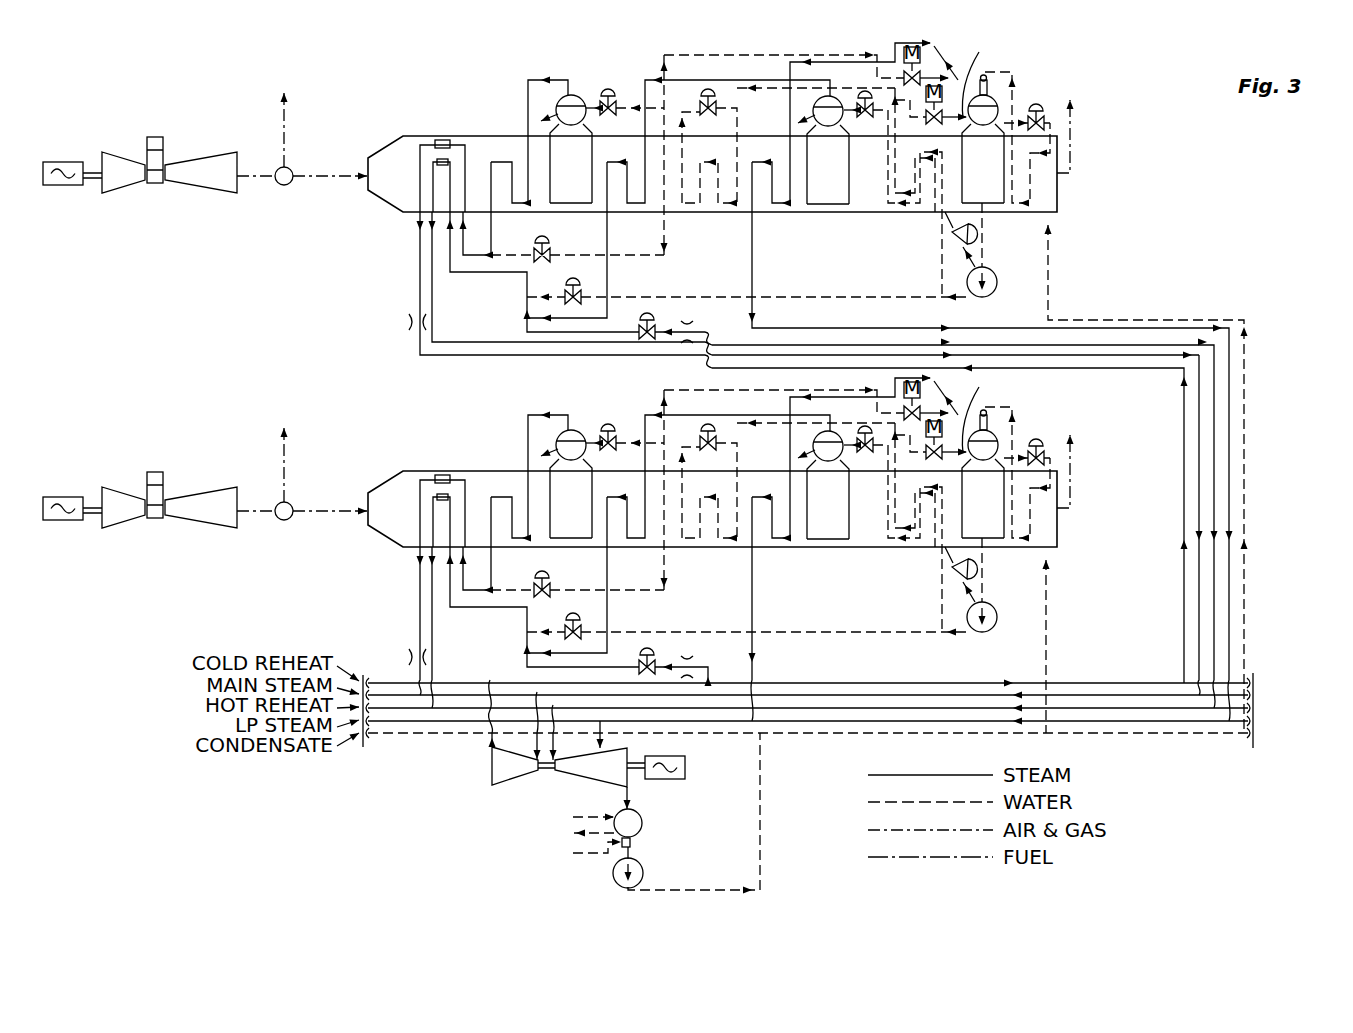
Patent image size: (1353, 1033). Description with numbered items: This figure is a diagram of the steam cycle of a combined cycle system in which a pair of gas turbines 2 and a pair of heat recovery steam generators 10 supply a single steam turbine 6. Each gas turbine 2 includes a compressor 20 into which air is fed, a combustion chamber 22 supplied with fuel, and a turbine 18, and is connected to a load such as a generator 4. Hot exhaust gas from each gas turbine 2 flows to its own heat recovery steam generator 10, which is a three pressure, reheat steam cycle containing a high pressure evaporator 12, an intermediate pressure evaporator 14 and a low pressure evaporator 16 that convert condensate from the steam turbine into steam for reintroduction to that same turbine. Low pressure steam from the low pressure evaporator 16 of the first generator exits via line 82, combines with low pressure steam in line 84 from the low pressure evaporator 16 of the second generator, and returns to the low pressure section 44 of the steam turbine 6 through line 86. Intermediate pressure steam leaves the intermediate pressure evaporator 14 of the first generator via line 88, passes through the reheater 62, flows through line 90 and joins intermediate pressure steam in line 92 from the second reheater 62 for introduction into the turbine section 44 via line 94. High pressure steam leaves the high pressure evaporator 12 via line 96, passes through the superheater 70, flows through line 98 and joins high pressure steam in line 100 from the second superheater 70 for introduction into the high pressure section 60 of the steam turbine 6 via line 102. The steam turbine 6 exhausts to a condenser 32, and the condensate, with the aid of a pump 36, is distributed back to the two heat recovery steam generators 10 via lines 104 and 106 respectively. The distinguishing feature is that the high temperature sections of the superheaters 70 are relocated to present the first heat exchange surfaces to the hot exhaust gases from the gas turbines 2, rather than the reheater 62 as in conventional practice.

The gas turbine 2 is at (205, 293).
The turbine 18 is at (116, 152).
The combustion chamber 22 is at (156, 137).
The compressor 20 is at (208, 152).
The heat recovery steam generator 10 is at (447, 131).
The superheater 70 is at (418, 167).
The reheater 62 is at (431, 191).
The high pressure evaporator 12 is at (565, 204).
The intermediate pressure evaporator 14 is at (820, 205).
The low pressure evaporator 16 is at (997, 204).
The line 96 is at (528, 100).
The line 88 is at (607, 247).
The line 82 is at (752, 268).
The line 84 is at (752, 603).
The line 90 is at (581, 343).
The line 98 is at (514, 357).
The line 100 is at (418, 622).
The line 92 is at (432, 640).
The line 104 is at (1048, 237).
The line 106 is at (1046, 626).
The steam turbine 6 is at (582, 787).
The high pressure section 60 is at (497, 763).
The low pressure section 44 is at (586, 770).
The generator 4 is at (685, 770).
The line 102 is at (517, 717).
The line 94 is at (561, 726).
The line 86 is at (602, 724).
The condenser 32 is at (642, 826).
The pump 36 is at (642, 875).